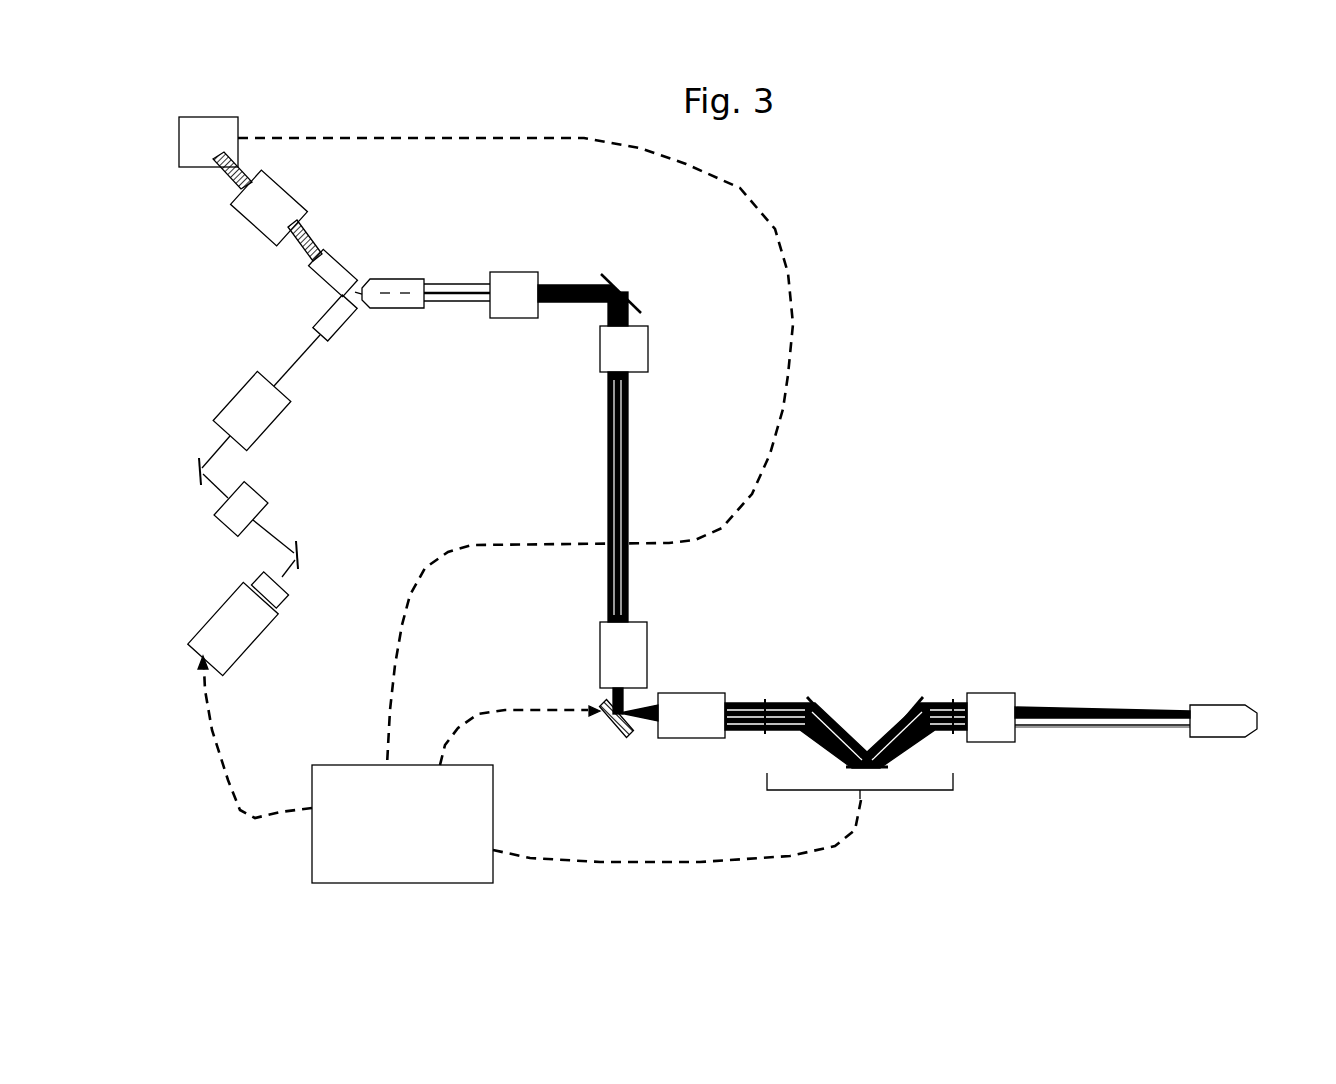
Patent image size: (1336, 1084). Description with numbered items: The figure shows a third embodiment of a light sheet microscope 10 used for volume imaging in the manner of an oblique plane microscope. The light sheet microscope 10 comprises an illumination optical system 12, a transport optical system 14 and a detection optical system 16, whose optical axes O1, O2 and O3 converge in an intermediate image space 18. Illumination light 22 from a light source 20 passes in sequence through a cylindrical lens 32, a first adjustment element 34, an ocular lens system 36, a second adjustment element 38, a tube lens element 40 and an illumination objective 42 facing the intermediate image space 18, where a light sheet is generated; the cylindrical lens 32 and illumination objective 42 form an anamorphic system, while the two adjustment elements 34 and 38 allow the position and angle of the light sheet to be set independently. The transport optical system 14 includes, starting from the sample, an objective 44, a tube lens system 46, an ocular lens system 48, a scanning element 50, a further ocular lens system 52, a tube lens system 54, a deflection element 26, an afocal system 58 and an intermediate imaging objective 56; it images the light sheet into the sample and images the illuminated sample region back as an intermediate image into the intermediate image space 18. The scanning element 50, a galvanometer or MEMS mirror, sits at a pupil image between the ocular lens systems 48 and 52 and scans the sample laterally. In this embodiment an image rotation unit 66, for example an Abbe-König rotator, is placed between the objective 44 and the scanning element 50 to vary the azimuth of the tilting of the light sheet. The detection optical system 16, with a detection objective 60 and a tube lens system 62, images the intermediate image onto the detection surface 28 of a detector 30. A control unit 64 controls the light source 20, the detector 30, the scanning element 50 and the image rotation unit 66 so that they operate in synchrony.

The light sheet microscope 10 is at (840, 233).
The illumination optical system 12 is at (332, 474).
The transport optical system 14 is at (878, 590).
The detection optical system 16 is at (230, 232).
The intermediate image space 18 is at (358, 294).
The light source 20 is at (252, 645).
The illumination light 22 is at (270, 532).
The deflection element 26 is at (624, 290).
The detection surface 28 is at (208, 160).
The detector 30 is at (212, 117).
The cylindrical lens 32 is at (258, 576).
The first adjustment element 34 is at (302, 558).
The ocular lens system 36 is at (228, 530).
The second adjustment element 38 is at (196, 471).
The tube lens element 40 is at (272, 428).
The illumination objective 42 is at (343, 331).
The objective 44 is at (1215, 705).
The tube lens system 46 is at (980, 693).
The ocular lens system 48 is at (677, 738).
The scanning element 50 is at (617, 727).
The ocular lens system 52 is at (600, 648).
The tube lens system 54 is at (648, 352).
The intermediate imaging objective 56 is at (396, 280).
The afocal system 58 is at (515, 272).
The detection objective 60 is at (335, 262).
The tube lens system 62 is at (290, 195).
The control unit 64 is at (405, 883).
The image rotation unit 66 is at (917, 795).
The optical axis of the illumination optical system O1 is at (352, 304).
The optical axis of the transport optical system O2 is at (396, 300).
The optical axis of the detection optical system O3 is at (350, 285).